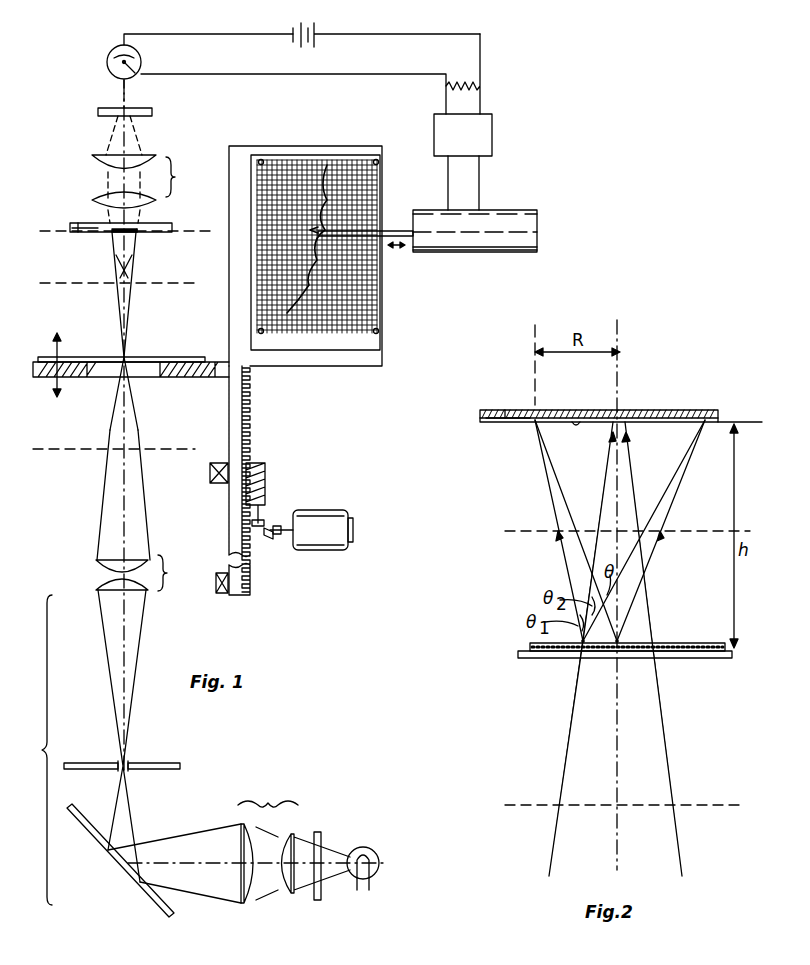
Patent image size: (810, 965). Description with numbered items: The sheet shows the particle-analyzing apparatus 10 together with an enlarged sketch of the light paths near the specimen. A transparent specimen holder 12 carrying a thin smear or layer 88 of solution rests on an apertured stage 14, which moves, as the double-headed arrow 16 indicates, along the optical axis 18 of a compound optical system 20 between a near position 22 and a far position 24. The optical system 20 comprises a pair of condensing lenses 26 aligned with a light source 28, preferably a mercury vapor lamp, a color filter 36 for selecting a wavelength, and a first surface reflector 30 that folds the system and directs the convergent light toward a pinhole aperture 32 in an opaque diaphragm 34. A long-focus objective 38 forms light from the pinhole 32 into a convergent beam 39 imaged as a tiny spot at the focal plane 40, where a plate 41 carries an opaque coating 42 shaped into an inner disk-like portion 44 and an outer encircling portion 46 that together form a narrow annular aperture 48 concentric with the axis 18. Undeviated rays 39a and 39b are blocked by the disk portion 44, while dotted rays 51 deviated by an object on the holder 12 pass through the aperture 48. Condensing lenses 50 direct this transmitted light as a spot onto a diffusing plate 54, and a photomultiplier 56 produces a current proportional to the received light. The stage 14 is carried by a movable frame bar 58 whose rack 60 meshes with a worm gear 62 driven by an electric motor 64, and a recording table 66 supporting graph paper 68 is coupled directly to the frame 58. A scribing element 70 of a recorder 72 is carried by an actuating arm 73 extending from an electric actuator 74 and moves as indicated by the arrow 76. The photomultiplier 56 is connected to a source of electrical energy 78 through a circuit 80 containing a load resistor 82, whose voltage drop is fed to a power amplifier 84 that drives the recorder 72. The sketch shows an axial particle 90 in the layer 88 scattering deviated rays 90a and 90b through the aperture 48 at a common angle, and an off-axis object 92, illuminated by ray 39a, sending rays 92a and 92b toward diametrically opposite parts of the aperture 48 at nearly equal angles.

In FIG. 1, the apparatus 10 is at (342, 396).
In FIG. 1, the transparent specimen holder 12 is at (162, 357).
In FIG. 2, the transparent specimen holder 12 is at (518, 658).
In FIG. 1, the apertured stage 14 is at (182, 378).
In FIG. 1, the double-headed arrow 16 is at (37, 364).
In FIG. 1, the optical axis 18 is at (116, 409).
In FIG. 2, the optical axis 18 is at (620, 700).
In FIG. 1, the compound optical system 20 is at (78, 747).
In FIG. 1, the near position 22 is at (44, 272).
In FIG. 2, the near position 22 is at (520, 512).
In FIG. 1, the far position 24 is at (50, 458).
In FIG. 2, the far position 24 is at (516, 790).
In FIG. 1, the condensing lenses 26 is at (294, 839).
In FIG. 1, the light source 28 is at (363, 847).
In FIG. 1, the first surface reflector 30 is at (98, 822).
In FIG. 1, the pinhole aperture 32 is at (128, 768).
In FIG. 1, the opaque diaphragm 34 is at (156, 764).
In FIG. 1, the color filter 36 is at (317, 902).
In FIG. 1, the objective 38 is at (144, 573).
In FIG. 1, the convergent beam 39 is at (108, 509).
In FIG. 1, the undeviated light ray 39a is at (118, 324).
In FIG. 2, the undeviated light ray 39a is at (569, 737).
In FIG. 1, the undeviated light ray 39b is at (132, 336).
In FIG. 2, the undeviated light ray 39b is at (668, 737).
In FIG. 1, the focal plane 40 is at (34, 231).
In FIG. 2, the focal plane 40 is at (748, 412).
In FIG. 1, the plate 41 is at (76, 223).
In FIG. 2, the plate 41 is at (504, 411).
In FIG. 1, the opaque coating 42 is at (170, 227).
In FIG. 2, the opaque coating 42 is at (480, 420).
In FIG. 1, the inner opaque circular disk-like portion 44 is at (110, 234).
In FIG. 2, the inner opaque circular disk-like portion 44 is at (577, 421).
In FIG. 1, the outer encircling opaque portion 46 is at (80, 233).
In FIG. 2, the outer encircling opaque portion 46 is at (506, 423).
In FIG. 1, the annular slit or light aperture 48 is at (139, 234).
In FIG. 2, the annular slit or light aperture 48 is at (532, 430).
In FIG. 1, the condensing lenses 50 is at (145, 169).
In FIG. 1, the dotted lines 51 is at (130, 276).
In FIG. 1, the diffusing plate 54 is at (154, 112).
In FIG. 1, the photomultiplier 56 is at (107, 62).
In FIG. 1, the movable frame bar 58 is at (228, 498).
In FIG. 1, the rack 60 is at (252, 419).
In FIG. 1, the worm gear 62 is at (268, 484).
In FIG. 1, the electric motor 64 is at (327, 520).
In FIG. 1, the recording table 66 is at (296, 146).
In FIG. 1, the graph paper 68 is at (382, 295).
In FIG. 1, the scribing element 70 is at (321, 234).
In FIG. 1, the recorder 72 is at (427, 325).
In FIG. 1, the actuating arm 73 is at (405, 231).
In FIG. 1, the sensitive electric actuator 74 is at (486, 255).
In FIG. 1, the double-headed arrow 76 is at (394, 248).
In FIG. 1, the source of electrical energy 78 is at (293, 34).
In FIG. 1, the electrical circuit 80 is at (330, 74).
In FIG. 1, the load resistor 82 is at (464, 84).
In FIG. 1, the power amplifier 84 is at (492, 126).
In FIG. 2, the smear or thin layer of material 88 is at (530, 644).
In FIG. 2, the axially disposed particle 90 is at (616, 646).
In FIG. 2, the deviated ray 90a is at (574, 540).
In FIG. 2, the deviated ray 90b is at (668, 543).
In FIG. 2, the off-axis small object 92 is at (582, 641).
In FIG. 2, the scattered light ray 92a is at (570, 564).
In FIG. 2, the scattered light ray 92b is at (646, 560).